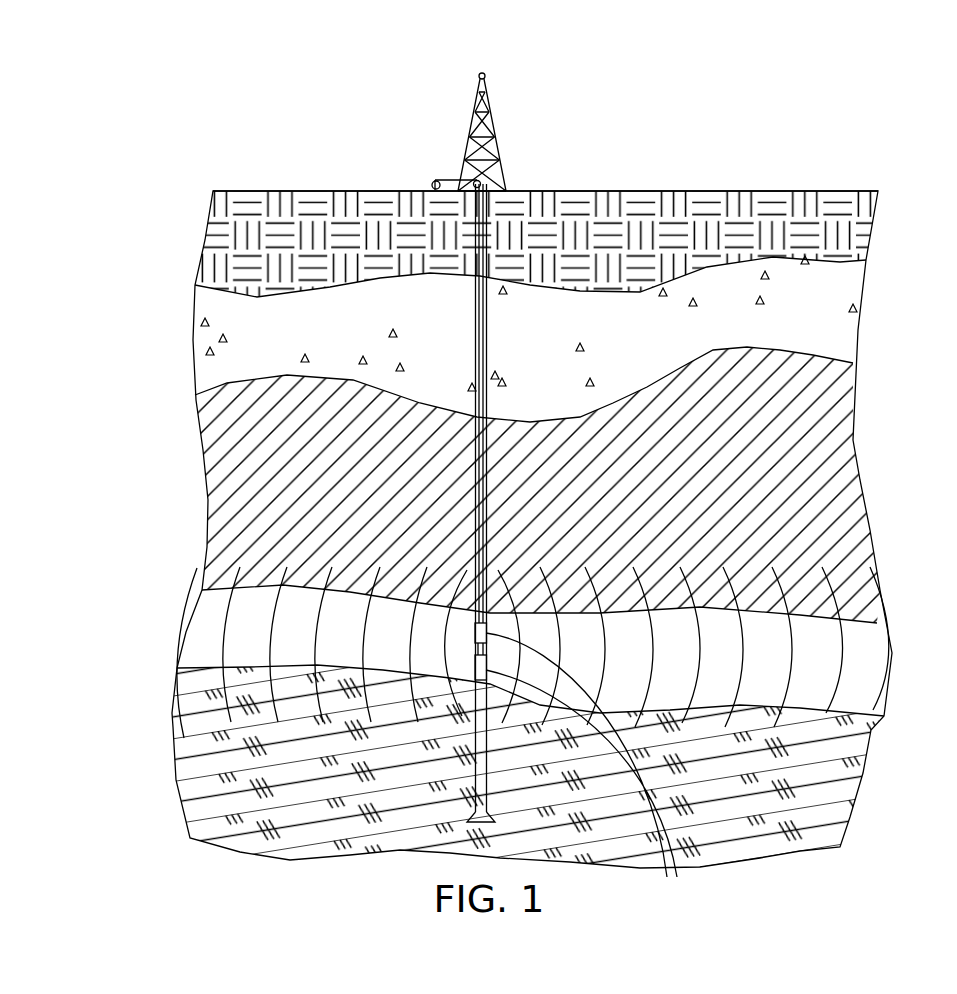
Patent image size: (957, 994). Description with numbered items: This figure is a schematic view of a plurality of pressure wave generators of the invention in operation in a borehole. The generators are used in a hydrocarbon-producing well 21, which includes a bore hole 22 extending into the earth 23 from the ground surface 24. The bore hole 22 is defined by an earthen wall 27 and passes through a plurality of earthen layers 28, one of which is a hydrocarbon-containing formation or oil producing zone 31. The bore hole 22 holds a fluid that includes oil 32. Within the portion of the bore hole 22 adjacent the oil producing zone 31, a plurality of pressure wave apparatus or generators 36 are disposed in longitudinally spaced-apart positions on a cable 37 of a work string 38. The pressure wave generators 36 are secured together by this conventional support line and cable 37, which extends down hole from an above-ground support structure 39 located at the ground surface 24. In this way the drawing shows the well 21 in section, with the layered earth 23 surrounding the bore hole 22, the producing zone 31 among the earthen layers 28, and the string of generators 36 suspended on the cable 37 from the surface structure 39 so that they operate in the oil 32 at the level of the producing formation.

The hydrocarbon-producing well 21 is at (516, 167).
The bore hole 22 is at (487, 230).
The earth 23 is at (525, 493).
The ground surface 24 is at (705, 191).
The earthen wall 27 is at (483, 228).
The earthen layers 28 is at (525, 503).
The oil producing zone 31 is at (870, 668).
The oil 32 is at (487, 307).
The pressure wave generators 36 is at (533, 739).
The cable 37 is at (477, 325).
The work string 38 is at (492, 576).
The above-ground support structure 39 is at (498, 140).